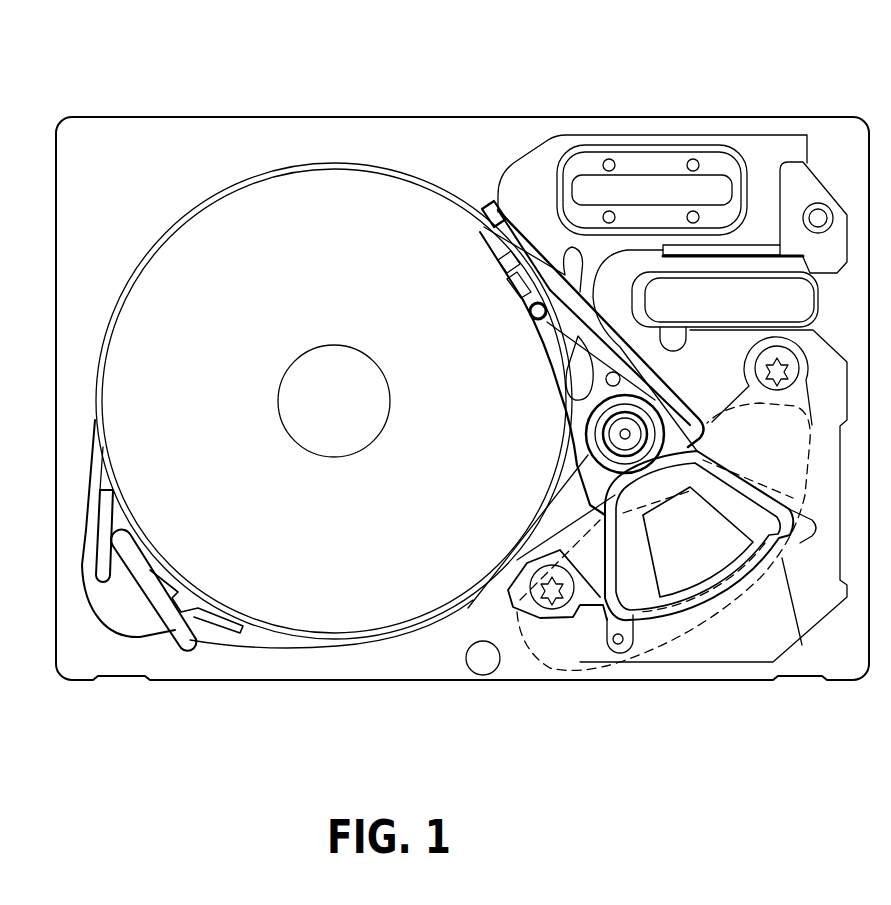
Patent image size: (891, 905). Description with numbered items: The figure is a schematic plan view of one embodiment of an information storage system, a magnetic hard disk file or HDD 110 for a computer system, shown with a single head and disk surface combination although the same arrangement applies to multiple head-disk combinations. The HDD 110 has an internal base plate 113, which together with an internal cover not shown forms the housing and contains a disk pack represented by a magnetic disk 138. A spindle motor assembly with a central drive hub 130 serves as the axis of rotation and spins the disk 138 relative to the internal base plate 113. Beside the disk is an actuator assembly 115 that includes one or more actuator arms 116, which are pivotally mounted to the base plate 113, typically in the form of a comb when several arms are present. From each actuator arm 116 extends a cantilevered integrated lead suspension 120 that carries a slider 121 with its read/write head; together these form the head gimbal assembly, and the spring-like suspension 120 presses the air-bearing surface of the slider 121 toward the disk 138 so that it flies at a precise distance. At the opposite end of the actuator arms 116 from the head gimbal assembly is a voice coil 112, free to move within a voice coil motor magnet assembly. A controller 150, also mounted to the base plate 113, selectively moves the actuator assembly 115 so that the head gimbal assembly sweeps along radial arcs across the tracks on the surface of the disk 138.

The HDD 110 is at (192, 84).
The internal base plate 113 is at (408, 117).
The magnetic disk 138 is at (310, 117).
The central drive hub 130 is at (356, 419).
The actuator assembly 115 is at (585, 456).
The actuator arm 116 is at (565, 348).
The integrated lead suspension 120 is at (495, 272).
The slider 121 is at (478, 224).
The voice coil 112 is at (574, 668).
The controller 150 is at (796, 655).